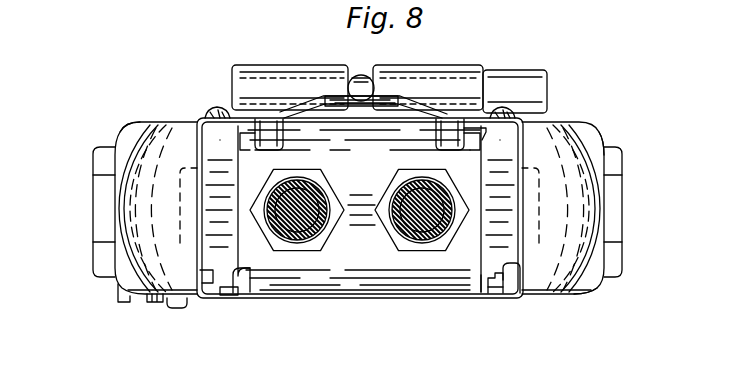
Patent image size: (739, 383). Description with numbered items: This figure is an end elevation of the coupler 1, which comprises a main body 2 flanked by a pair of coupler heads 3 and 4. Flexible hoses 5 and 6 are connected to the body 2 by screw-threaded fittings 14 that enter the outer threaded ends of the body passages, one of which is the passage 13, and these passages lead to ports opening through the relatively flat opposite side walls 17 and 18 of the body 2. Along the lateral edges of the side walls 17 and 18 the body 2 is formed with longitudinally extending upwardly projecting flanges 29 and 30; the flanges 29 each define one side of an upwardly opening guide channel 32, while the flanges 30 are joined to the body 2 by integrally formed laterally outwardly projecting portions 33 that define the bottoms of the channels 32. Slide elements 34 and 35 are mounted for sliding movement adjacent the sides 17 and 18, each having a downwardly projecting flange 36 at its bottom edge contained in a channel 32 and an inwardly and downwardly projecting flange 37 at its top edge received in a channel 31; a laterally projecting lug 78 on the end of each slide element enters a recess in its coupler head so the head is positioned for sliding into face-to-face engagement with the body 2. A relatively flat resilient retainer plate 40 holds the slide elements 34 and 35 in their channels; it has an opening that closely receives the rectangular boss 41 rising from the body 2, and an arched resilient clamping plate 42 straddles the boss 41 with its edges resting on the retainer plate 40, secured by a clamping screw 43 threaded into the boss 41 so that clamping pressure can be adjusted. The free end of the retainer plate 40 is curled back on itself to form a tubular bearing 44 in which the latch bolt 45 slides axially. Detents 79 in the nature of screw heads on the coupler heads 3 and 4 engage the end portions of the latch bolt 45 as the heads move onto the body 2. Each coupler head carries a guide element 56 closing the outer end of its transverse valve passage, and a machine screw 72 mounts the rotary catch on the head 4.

The coupler 1 is at (343, 301).
The main body 2 is at (393, 286).
The coupler head 3 is at (550, 211).
The coupler head 4 is at (140, 211).
The flexible hose 5 is at (415, 219).
The flexible hose 6 is at (290, 219).
The longitudinally extending passage 13 is at (121, 300).
The fitting 14 is at (388, 236).
The side wall 17 is at (485, 233).
The side wall 18 is at (142, 127).
The upwardly projecting flange 29 is at (203, 120).
The upwardly projecting flange 30 is at (160, 300).
The channel 31 is at (272, 128).
The guide channel 32 is at (244, 270).
The laterally outwardly projecting portion 33 is at (229, 295).
The slide element 34 is at (490, 179).
The slide element 35 is at (208, 174).
The downwardly projecting flange 36 is at (216, 279).
The inwardly and downwardly projecting flange 37 is at (262, 128).
The retainer plate 40 is at (466, 130).
The rectangular boss 41 is at (355, 105).
The clamping plate 42 is at (303, 110).
The clamping screw 43 is at (376, 87).
The tubular bearing 44 is at (430, 80).
The latch bolt 45 is at (525, 82).
The guide element 56 is at (100, 206).
The machine screw 72 is at (172, 309).
The lug 78 is at (607, 130).
The detent 79 is at (213, 108).